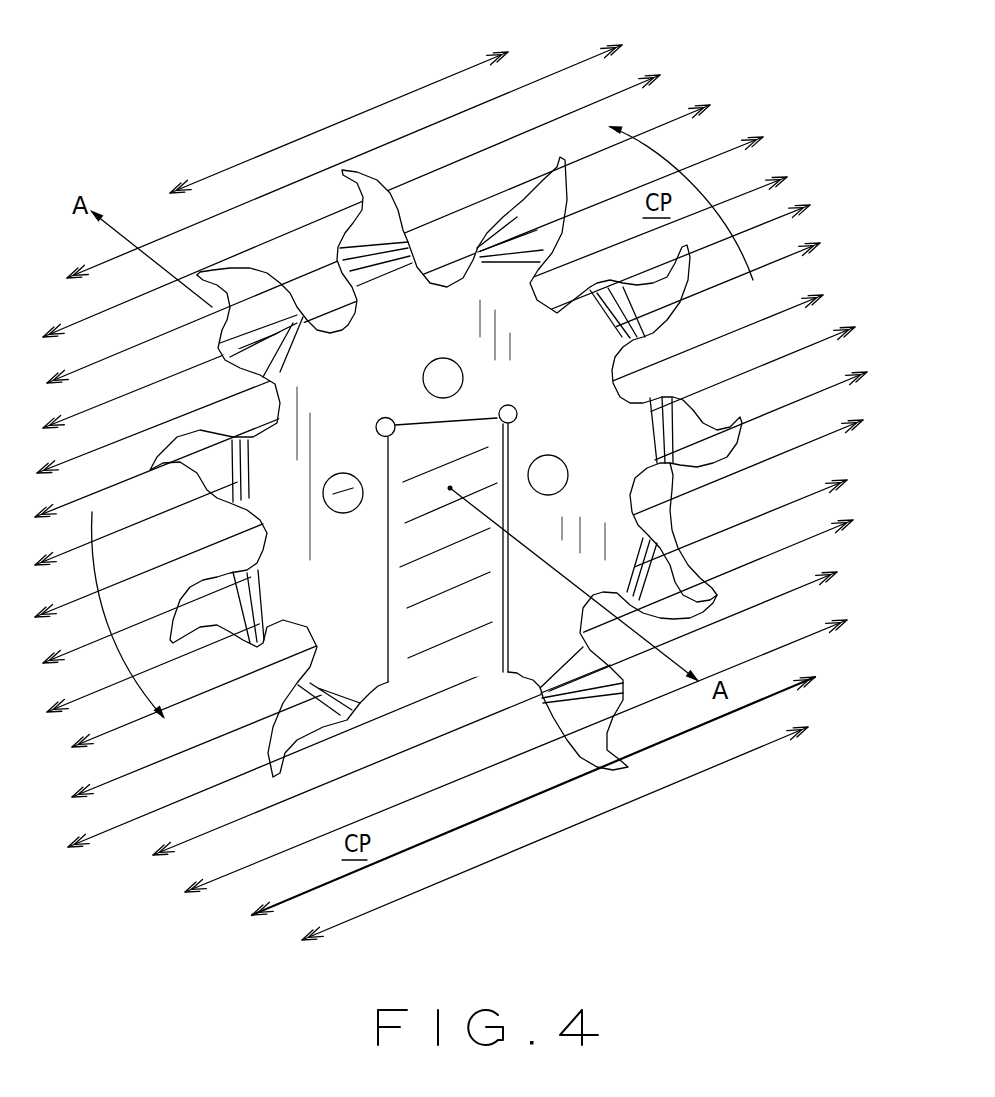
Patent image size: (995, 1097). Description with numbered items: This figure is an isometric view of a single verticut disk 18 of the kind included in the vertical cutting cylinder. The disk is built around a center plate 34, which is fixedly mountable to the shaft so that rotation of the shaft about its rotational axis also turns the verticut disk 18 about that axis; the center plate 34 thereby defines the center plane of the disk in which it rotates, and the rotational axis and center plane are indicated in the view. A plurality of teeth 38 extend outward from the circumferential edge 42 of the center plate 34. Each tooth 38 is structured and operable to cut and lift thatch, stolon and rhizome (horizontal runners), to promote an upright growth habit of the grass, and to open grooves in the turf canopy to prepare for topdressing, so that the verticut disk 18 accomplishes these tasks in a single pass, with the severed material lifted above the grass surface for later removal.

The verticut disk 18 is at (305, 112).
The center plate 34 is at (575, 418).
The teeth 38 is at (497, 217).
The circumferential edge 42 is at (342, 323).